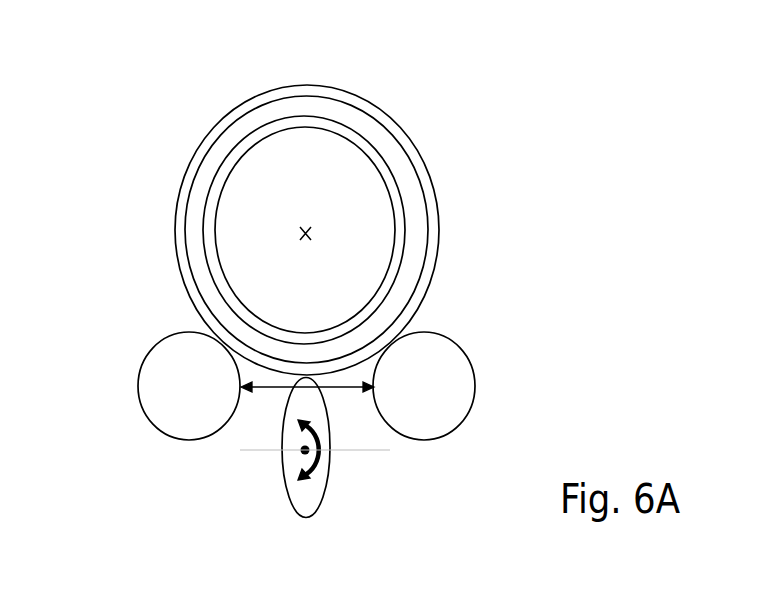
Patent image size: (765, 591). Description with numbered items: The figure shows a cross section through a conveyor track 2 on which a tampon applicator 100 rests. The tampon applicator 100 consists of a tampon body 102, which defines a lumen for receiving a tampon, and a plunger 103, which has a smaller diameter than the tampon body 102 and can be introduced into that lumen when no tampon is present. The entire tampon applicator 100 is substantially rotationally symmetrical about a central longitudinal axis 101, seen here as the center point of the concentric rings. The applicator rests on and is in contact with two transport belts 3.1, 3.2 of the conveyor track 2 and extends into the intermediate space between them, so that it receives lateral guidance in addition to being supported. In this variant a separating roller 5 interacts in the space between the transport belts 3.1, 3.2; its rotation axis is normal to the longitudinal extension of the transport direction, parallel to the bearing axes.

The tampon applicator 100 is at (456, 125).
The central longitudinal axis 101 is at (312, 229).
The tampon body 102 is at (381, 111).
The plunger 103 is at (241, 139).
The conveyor track 2 is at (332, 387).
The transport belt 3.1 is at (452, 381).
The transport belt 3.2 is at (169, 377).
The separating roller 5 is at (310, 498).